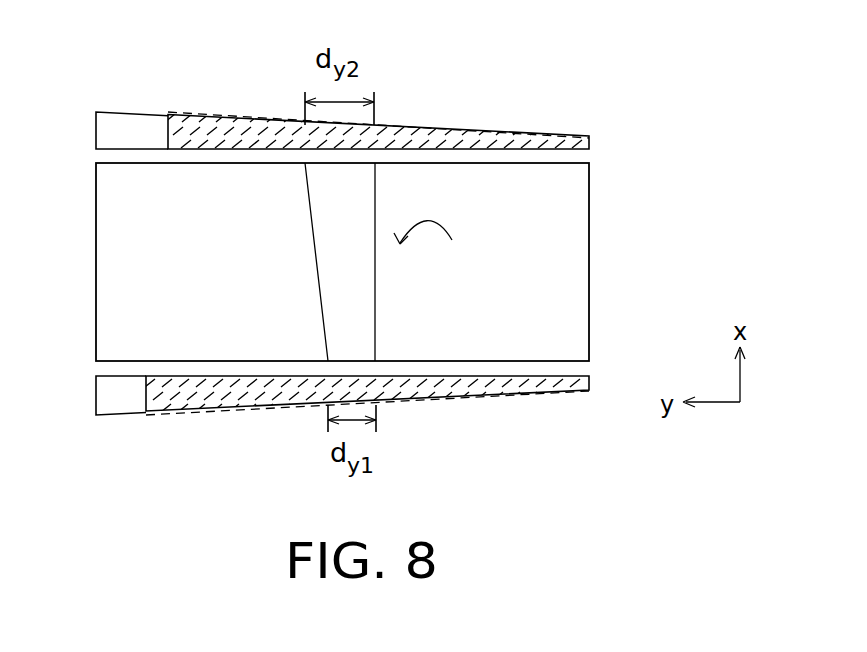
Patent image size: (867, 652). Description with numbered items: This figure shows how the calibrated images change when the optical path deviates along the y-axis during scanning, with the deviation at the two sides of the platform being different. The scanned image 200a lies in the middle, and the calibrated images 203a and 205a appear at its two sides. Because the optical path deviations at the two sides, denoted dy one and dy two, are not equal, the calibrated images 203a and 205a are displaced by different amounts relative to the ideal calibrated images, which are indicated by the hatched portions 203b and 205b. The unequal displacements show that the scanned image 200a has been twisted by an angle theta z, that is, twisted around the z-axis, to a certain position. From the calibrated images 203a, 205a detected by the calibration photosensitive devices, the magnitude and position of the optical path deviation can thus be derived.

The hatched portion 203b is at (118, 122).
The calibrated image 203a is at (472, 137).
The scanned image 200a is at (555, 289).
The hatched portion 205b is at (128, 403).
The calibrated image 205a is at (475, 400).